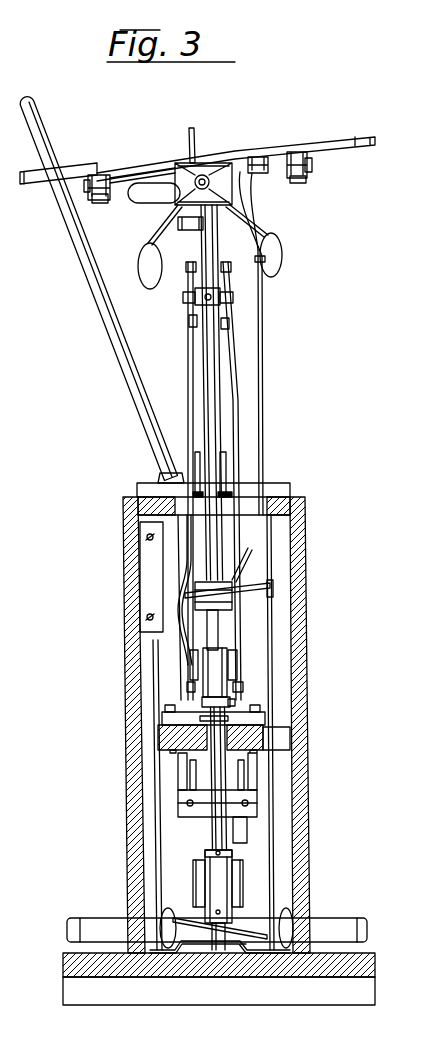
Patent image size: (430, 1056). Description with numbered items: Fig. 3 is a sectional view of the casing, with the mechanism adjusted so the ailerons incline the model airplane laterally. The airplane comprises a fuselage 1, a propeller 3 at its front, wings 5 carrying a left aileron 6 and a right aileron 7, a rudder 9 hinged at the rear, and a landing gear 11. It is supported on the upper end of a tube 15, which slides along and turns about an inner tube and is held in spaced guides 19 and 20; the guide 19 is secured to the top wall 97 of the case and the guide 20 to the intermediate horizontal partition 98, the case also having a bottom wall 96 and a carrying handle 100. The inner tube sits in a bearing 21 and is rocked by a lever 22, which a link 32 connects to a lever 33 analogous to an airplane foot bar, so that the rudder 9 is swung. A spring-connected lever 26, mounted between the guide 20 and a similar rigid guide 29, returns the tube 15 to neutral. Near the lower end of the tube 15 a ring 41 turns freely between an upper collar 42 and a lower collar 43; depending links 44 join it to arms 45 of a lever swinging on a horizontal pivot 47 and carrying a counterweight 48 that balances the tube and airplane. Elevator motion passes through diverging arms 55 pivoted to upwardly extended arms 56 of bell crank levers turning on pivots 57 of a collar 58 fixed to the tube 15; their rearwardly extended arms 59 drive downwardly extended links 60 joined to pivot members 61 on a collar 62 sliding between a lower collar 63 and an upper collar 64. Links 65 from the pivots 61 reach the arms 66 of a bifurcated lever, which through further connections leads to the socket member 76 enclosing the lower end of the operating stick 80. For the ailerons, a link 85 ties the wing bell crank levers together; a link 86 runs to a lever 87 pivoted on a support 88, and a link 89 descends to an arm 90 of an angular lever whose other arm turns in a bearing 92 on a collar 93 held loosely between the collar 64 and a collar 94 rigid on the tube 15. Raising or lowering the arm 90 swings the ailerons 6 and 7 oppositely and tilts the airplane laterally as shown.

The fuselage 1 is at (216, 165).
The propeller 3 is at (152, 194).
The wings 5 is at (268, 150).
The aileron 6 is at (357, 146).
The aileron 7 is at (70, 167).
The rudder 9 is at (193, 127).
The landing gear 11 is at (283, 240).
The tube 15 is at (214, 438).
The guide 19 is at (232, 495).
The guide 20 is at (185, 728).
The bearing 21 is at (215, 915).
The lever 22 is at (238, 945).
The lever 26 is at (181, 757).
The rigid guide 29 is at (266, 718).
The link 32 is at (192, 920).
The lever 33 is at (322, 925).
The ring 41 is at (243, 876).
The upper collar 42 is at (205, 854).
The lower collar 43 is at (172, 948).
The depending links 44 is at (215, 880).
The arms 45 is at (243, 892).
The horizontal pivot 47 is at (247, 833).
The counterweight 48 is at (252, 826).
The diverging arms 55 is at (222, 245).
The upwardly extended arms 56 is at (230, 278).
The pivots 57 is at (233, 297).
The collar 58 is at (226, 312).
The rearwardly extended arms 59 is at (229, 326).
The downwardly extended links 60 is at (233, 412).
The pivot members 61 is at (243, 689).
The collar 62 is at (203, 702).
The lower collar 63 is at (235, 703).
The upper collar 64 is at (218, 622).
The links 65 is at (237, 674).
The arms 66 is at (228, 665).
The socket member 76 is at (165, 478).
The operating lever or stick 80 is at (94, 272).
The link 85 is at (145, 172).
The link 86 is at (256, 174).
The lever 87 is at (258, 185).
The support 88 is at (256, 157).
The link 89 is at (262, 363).
The arm 90 is at (273, 586).
The bearing 92 is at (180, 605).
The collar 93 is at (238, 600).
The collar 94 is at (246, 552).
The bottom wall 96 is at (248, 944).
The top wall 97 is at (285, 503).
The intermediate horizontal partition 98 is at (282, 738).
The handle 100 is at (226, 464).